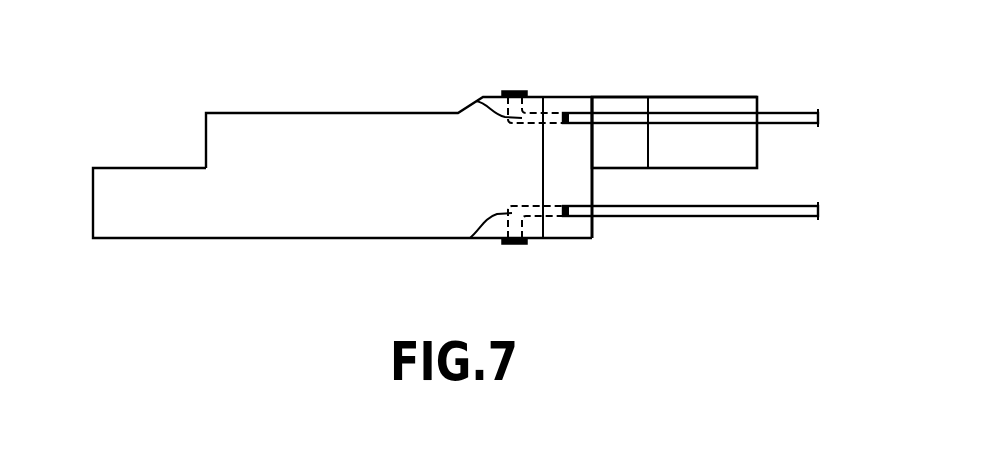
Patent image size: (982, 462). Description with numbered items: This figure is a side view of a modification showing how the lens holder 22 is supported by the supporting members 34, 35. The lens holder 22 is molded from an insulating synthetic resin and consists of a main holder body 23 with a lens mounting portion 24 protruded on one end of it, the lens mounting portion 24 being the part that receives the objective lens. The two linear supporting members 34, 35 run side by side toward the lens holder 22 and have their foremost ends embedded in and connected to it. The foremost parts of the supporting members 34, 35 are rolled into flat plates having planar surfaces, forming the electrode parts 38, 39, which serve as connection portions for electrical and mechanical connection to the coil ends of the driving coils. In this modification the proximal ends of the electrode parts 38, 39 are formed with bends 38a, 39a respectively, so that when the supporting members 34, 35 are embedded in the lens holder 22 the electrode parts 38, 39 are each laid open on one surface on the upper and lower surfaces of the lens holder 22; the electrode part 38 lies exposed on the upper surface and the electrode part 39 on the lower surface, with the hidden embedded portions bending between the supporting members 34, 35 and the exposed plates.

The lens holder 22 is at (246, 112).
The main holder body 23 is at (208, 238).
The lens mounting portion 24 is at (743, 142).
The supporting member 34 is at (786, 112).
The supporting member 35 is at (792, 218).
The electrode part 38 is at (515, 90).
The bend 38a is at (476, 101).
The electrode part 39 is at (517, 244).
The bend 39a is at (470, 240).